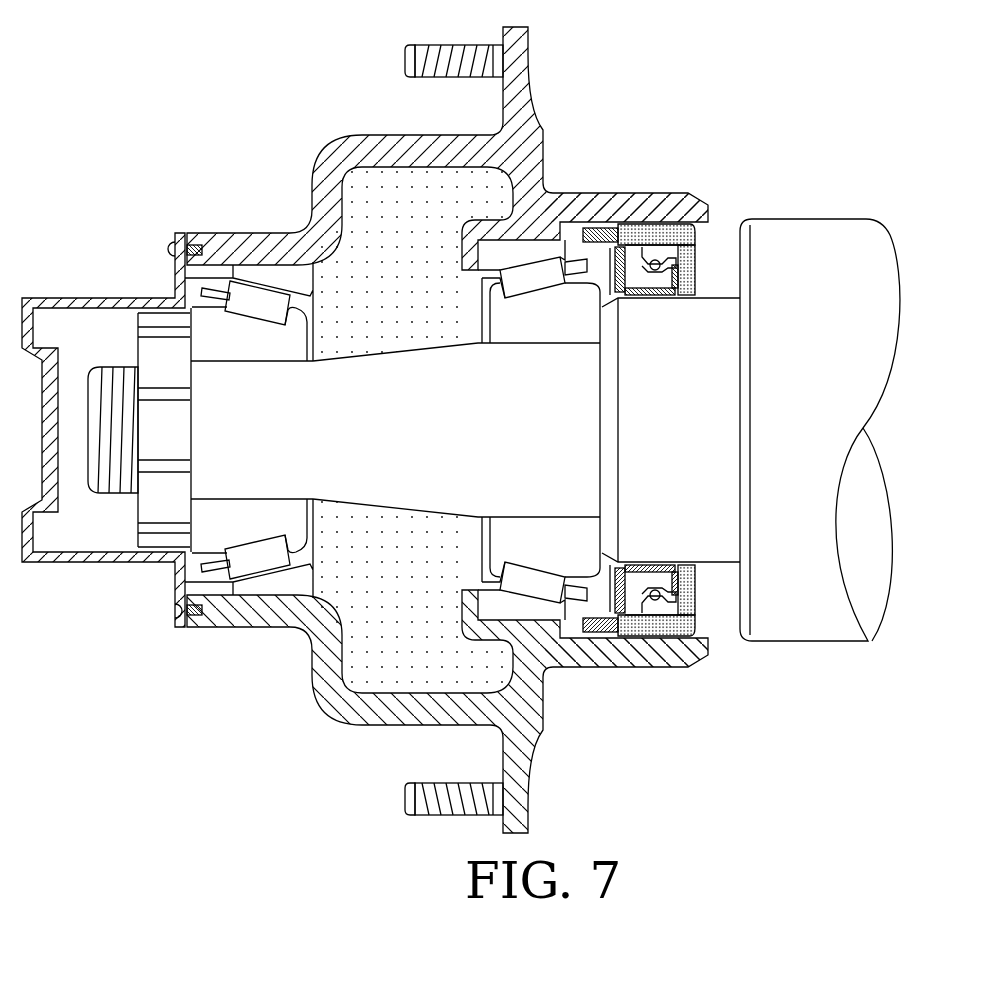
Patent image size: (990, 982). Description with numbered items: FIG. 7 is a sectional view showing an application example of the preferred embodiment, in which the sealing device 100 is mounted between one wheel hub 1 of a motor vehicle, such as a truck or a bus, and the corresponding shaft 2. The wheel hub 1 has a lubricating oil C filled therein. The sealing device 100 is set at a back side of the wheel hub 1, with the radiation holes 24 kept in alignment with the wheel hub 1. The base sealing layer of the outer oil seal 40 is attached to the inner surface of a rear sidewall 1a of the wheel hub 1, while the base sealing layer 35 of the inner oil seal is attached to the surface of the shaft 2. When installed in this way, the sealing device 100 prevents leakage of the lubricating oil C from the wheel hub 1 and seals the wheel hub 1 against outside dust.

The wheel hub 1 is at (530, 128).
The rear sidewall 1a is at (628, 195).
The shaft 2 is at (849, 371).
The radiation holes 24 is at (640, 225).
The base sealing layer 35 is at (737, 298).
The outer oil seal 40 is at (660, 375).
The sealing device 100 is at (688, 375).
The lubricating oil C is at (348, 262).